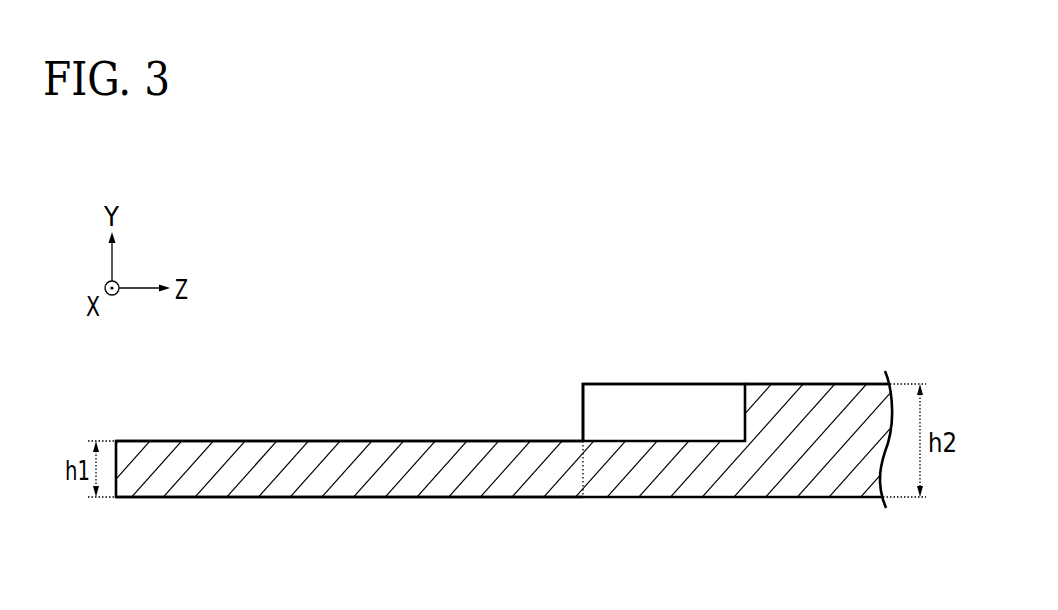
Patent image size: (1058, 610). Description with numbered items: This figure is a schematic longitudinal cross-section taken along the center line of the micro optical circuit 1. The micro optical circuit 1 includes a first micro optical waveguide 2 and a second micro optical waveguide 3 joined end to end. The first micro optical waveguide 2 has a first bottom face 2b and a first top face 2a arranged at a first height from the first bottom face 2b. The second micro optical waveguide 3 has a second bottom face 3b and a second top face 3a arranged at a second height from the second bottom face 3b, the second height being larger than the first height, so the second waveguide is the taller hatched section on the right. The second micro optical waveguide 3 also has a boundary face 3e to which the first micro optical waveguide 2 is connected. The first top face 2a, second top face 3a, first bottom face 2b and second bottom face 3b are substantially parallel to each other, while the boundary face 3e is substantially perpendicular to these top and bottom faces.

The micro optical circuit 1 is at (880, 314).
The first micro optical waveguide 2 is at (366, 499).
The first top face 2a is at (296, 441).
The first bottom face 2b is at (295, 499).
The second micro optical waveguide 3 is at (789, 459).
The second top face 3a is at (794, 384).
The second bottom face 3b is at (692, 499).
The boundary face 3e is at (582, 416).